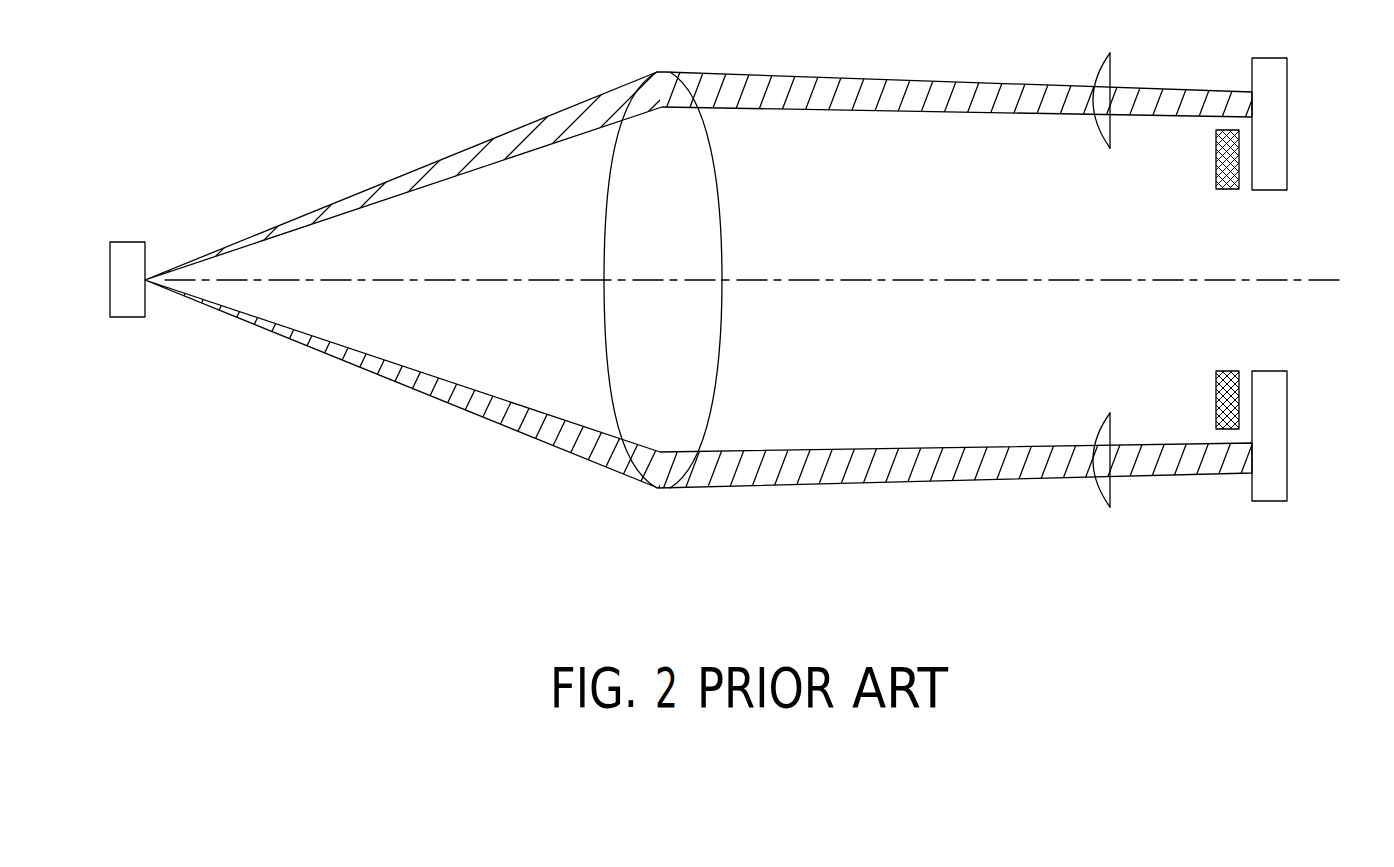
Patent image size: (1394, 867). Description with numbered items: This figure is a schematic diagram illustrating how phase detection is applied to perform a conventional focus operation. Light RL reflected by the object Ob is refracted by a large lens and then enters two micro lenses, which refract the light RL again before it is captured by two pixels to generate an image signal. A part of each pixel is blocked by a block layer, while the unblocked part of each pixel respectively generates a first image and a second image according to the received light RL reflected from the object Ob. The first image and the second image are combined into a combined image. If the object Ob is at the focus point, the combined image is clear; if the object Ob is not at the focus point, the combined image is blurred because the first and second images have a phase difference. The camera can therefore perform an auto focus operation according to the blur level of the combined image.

The object Ob is at (125, 317).
The light RL is at (520, 130).